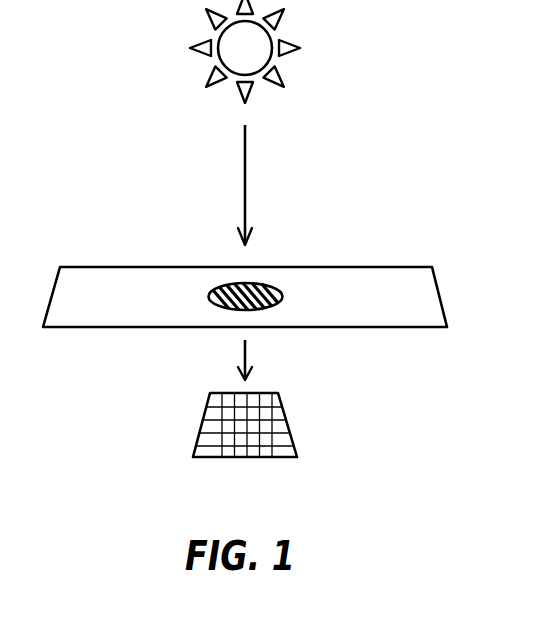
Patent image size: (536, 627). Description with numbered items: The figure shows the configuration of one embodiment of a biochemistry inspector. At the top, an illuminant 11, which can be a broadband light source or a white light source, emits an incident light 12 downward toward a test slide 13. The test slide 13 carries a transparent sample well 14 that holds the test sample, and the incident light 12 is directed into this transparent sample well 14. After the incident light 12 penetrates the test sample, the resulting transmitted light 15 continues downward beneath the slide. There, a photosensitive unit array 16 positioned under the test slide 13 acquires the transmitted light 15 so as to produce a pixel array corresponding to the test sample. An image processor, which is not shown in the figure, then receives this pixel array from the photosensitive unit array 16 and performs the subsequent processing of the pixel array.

The illuminant 11 is at (222, 33).
The incident light 12 is at (231, 185).
The test slide 13 is at (138, 267).
The transparent sample well 14 is at (280, 281).
The transmitted light 15 is at (232, 360).
The photosensitive unit array 16 is at (294, 435).